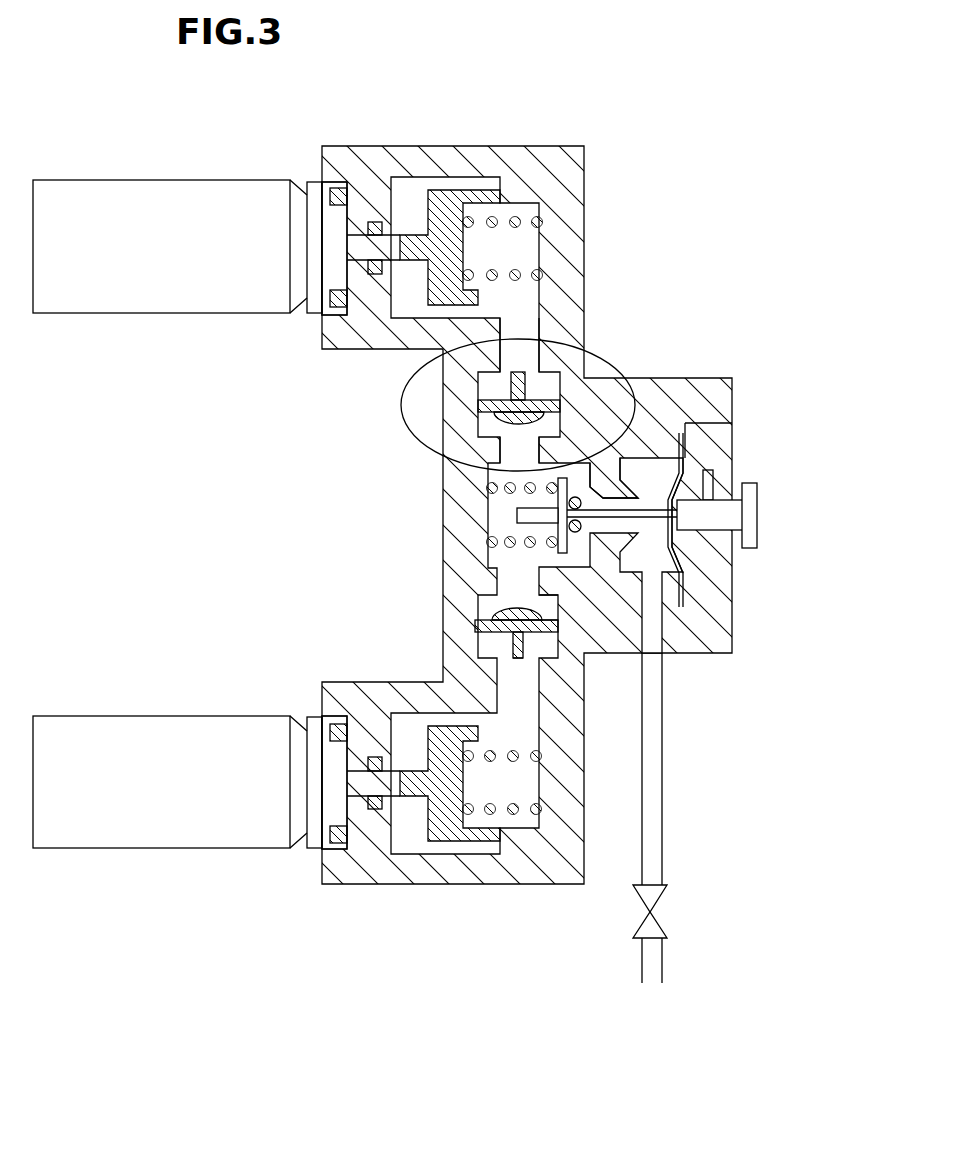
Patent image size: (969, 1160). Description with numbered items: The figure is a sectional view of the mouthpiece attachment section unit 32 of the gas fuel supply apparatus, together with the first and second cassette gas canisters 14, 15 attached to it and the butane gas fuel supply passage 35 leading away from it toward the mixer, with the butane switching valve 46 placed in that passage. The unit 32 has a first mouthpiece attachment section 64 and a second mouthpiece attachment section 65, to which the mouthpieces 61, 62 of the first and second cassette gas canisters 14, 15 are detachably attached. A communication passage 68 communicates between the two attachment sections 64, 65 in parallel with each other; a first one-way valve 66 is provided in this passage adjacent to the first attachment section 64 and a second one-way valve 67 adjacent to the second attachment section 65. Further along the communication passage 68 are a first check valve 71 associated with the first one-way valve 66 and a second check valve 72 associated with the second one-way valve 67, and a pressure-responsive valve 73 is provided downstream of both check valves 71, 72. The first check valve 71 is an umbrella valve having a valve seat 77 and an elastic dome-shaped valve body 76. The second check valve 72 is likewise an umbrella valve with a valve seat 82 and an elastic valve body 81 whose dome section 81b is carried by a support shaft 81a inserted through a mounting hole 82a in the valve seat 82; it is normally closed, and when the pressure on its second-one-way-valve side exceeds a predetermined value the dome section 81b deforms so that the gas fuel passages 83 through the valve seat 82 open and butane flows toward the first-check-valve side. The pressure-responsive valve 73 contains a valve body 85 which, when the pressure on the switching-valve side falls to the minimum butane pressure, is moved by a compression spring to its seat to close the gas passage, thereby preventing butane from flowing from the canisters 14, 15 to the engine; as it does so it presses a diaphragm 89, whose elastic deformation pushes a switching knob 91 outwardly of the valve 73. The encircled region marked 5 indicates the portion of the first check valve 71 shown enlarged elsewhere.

The valve 5 is at (617, 369).
The first cassette gas canister 14 is at (163, 190).
The second cassette gas canister 15 is at (158, 732).
The mouthpiece attachment section unit 32 is at (578, 136).
The butane gas fuel supply passage 35 is at (683, 752).
The butane switching valve 46 is at (660, 915).
The mouthpiece 61 is at (340, 300).
The mouthpiece 62 is at (340, 848).
The first mouthpiece attachment section 64 is at (338, 188).
The second mouthpiece attachment section 65 is at (335, 745).
The first one-way valve 66 is at (450, 190).
The second one-way valve 67 is at (440, 838).
The communication passage 68 is at (535, 340).
The first check valve 71 is at (467, 405).
The second check valve 72 is at (476, 619).
The pressure-responsive valve 73 is at (655, 490).
The valve body 76 is at (500, 450).
The valve seat 77 is at (557, 410).
The valve body 81 is at (487, 548).
The support shaft 81a is at (513, 657).
The dome section 81b is at (540, 600).
The valve seat 82 is at (475, 625).
The mounting hole 82a is at (538, 635).
The gas fuel passages 83 is at (497, 635).
The valve body 85 is at (657, 481).
The diaphragm 89 is at (727, 460).
The switching knob 91 is at (758, 515).